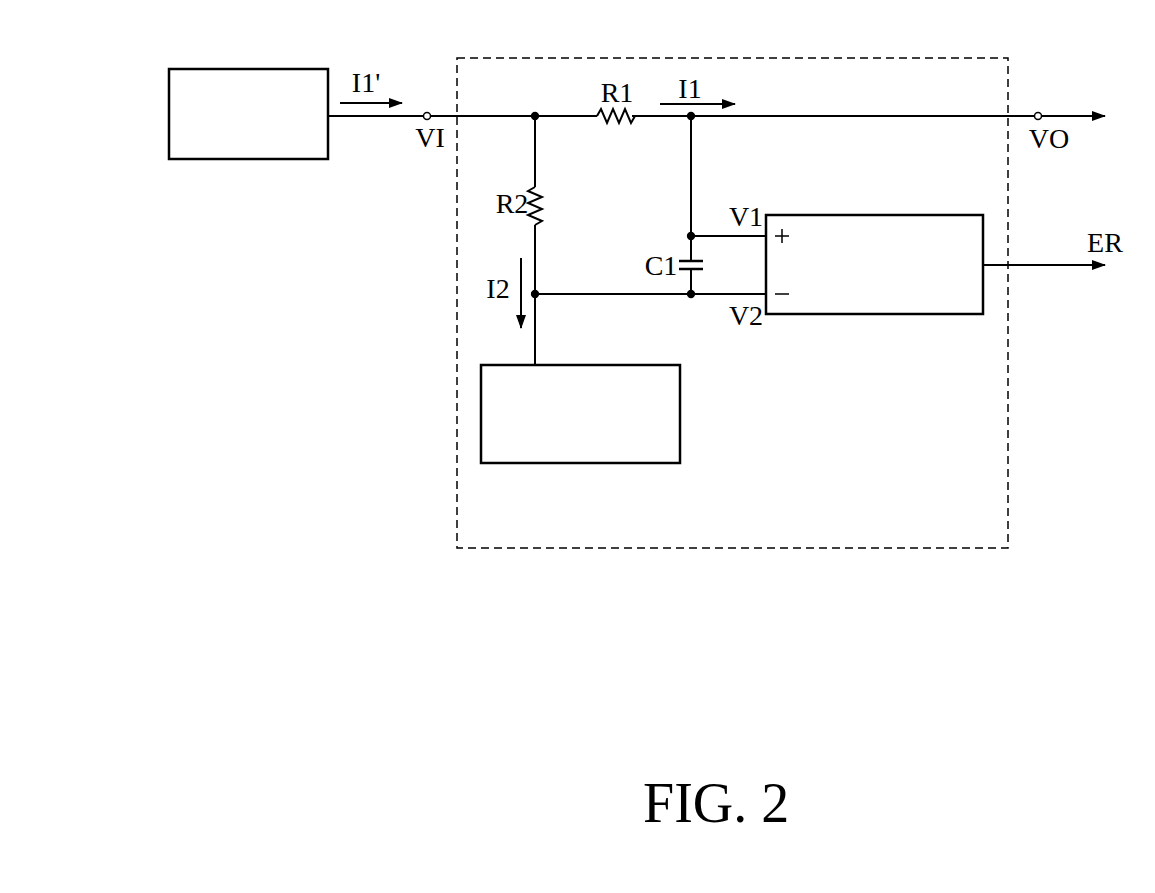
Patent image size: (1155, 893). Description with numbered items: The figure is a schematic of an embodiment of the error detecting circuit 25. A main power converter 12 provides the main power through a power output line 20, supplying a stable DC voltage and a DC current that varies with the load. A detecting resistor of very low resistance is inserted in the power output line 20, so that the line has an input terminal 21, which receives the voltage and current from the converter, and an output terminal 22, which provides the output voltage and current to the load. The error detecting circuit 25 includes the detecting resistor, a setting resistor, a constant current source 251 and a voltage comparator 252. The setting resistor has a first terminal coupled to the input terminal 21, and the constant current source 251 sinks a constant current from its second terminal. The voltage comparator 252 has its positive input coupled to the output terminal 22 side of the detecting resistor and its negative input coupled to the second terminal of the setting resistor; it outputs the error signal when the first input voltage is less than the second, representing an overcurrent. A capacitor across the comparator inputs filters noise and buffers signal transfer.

The main power converter 12 is at (248, 160).
The power output line 20 is at (377, 117).
The input terminal 21 is at (427, 112).
The output terminal 22 is at (1038, 112).
The error detecting circuit 25 is at (692, 549).
The constant current source 251 is at (534, 464).
The voltage comparator 252 is at (872, 315).